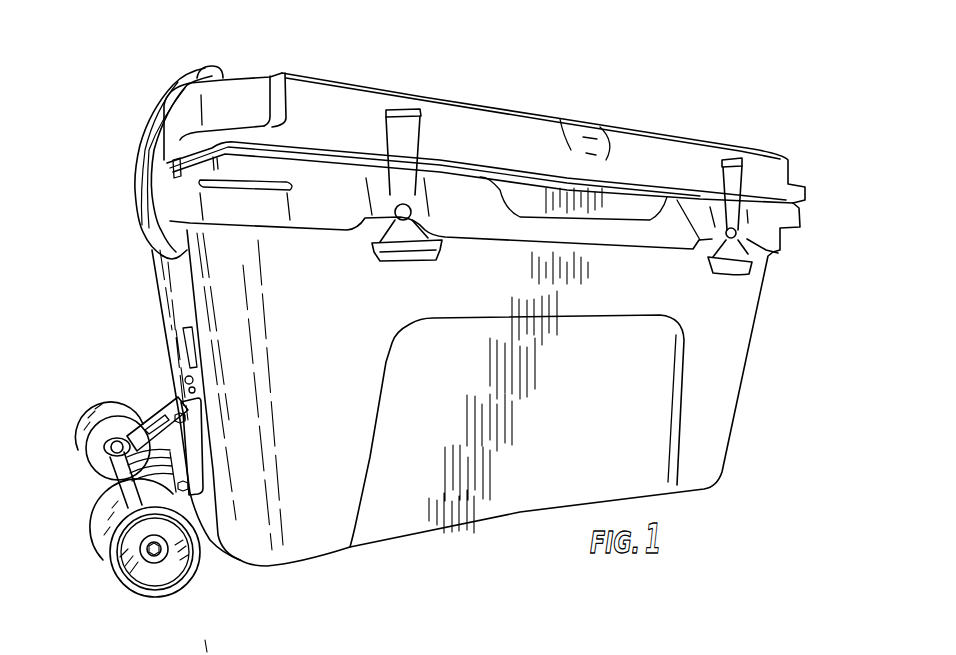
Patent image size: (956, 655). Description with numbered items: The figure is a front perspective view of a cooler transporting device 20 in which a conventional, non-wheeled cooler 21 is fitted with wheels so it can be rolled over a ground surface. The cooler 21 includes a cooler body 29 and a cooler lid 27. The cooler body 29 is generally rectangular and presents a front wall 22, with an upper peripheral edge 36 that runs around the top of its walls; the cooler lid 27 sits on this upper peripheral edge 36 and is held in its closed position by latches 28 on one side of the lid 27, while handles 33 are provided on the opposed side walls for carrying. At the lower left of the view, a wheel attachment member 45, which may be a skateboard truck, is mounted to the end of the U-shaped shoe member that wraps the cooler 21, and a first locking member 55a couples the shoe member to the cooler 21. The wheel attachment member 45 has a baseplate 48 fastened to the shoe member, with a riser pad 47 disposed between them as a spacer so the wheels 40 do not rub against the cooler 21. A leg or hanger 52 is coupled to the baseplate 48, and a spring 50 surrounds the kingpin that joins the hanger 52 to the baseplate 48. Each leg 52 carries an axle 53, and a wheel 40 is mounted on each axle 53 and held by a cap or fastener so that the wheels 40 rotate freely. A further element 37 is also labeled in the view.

The cooler transporting device 20 is at (58, 419).
The cooler 21 is at (750, 108).
The front wall 22 is at (630, 397).
The cooler lid 27 is at (495, 137).
The latches 28 is at (397, 117).
The cooler body 29 is at (797, 268).
The handles 33 is at (173, 97).
The upper peripheral edge 36 is at (197, 196).
The bottom handle 37 is at (192, 647).
The wheels 40 is at (103, 413).
The wheel attachment member 45 is at (85, 489).
The riser pad 47 is at (201, 498).
The baseplate 48 is at (180, 402).
The spring 50 is at (115, 463).
The leg 52 is at (108, 446).
The axle 53 is at (155, 553).
The first locking member 55a is at (187, 362).